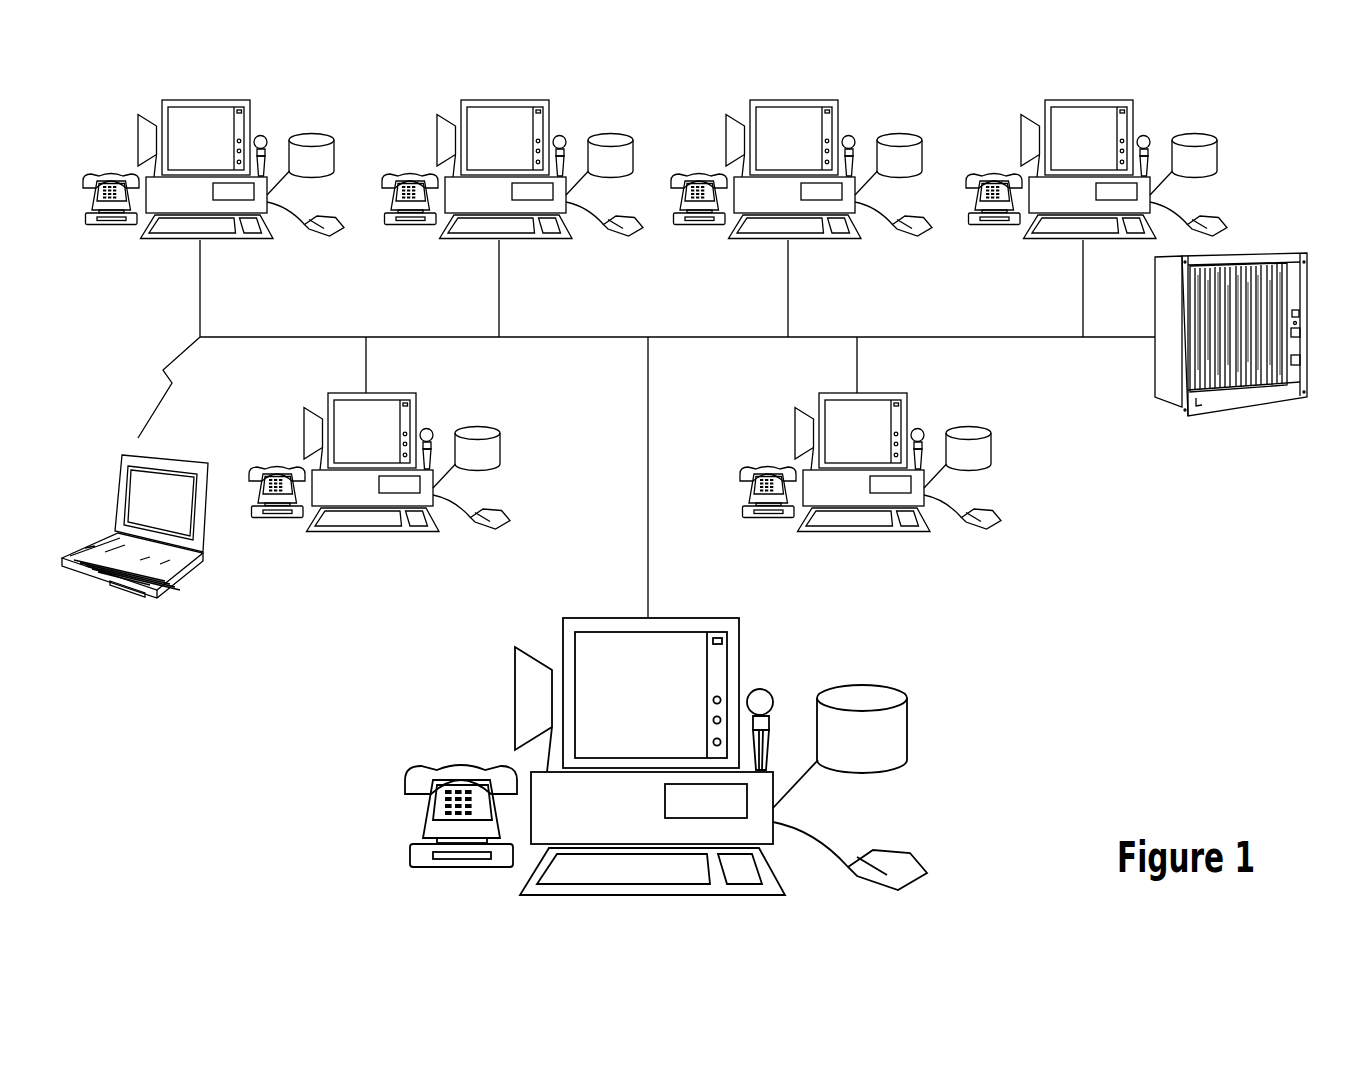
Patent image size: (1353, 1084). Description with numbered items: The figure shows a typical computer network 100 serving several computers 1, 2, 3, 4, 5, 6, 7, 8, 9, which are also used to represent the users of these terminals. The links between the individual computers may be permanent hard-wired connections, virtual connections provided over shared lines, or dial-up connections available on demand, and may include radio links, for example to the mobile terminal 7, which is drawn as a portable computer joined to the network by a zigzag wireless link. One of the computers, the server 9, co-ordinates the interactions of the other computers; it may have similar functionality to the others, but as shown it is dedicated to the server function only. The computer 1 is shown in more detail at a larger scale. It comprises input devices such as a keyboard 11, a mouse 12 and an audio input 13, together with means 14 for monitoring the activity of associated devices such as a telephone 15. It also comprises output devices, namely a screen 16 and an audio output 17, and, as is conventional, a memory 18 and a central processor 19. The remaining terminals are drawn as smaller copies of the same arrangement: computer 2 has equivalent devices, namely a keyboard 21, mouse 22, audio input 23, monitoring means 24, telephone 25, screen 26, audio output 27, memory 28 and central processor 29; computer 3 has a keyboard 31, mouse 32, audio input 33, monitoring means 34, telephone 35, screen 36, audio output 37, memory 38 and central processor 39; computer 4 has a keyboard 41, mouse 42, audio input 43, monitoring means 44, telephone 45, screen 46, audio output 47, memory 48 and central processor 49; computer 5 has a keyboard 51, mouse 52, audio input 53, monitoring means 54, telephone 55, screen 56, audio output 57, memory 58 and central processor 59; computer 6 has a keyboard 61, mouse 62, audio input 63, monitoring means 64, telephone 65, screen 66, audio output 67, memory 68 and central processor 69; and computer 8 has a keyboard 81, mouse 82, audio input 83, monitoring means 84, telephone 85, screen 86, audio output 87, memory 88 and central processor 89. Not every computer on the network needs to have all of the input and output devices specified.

The network 100 is at (1058, 607).
The computer 1 is at (674, 754).
The keyboard 11 is at (652, 890).
The mouse 12 is at (858, 855).
The audio input 13 is at (782, 713).
The means for monitoring the activity of associated devices 14 is at (461, 881).
The telephone 15 is at (461, 774).
The screen 16 is at (688, 692).
The audio output 17 is at (504, 709).
The memory 18 is at (840, 751).
The central processor 19 is at (680, 838).
The computer 2 is at (873, 458).
The keyboard 21 is at (864, 531).
The mouse 22 is at (969, 508).
The audio input 23 is at (931, 437).
The means for monitoring the activity of associated devices 24 is at (769, 530).
The telephone 25 is at (763, 467).
The screen 26 is at (885, 427).
The audio output 27 is at (785, 438).
The memory 28 is at (957, 462).
The central processor 29 is at (879, 505).
The computer 3 is at (1099, 165).
The keyboard 31 is at (1090, 238).
The mouse 32 is at (1195, 215).
The audio input 33 is at (1157, 144).
The means for monitoring the activity of associated devices 34 is at (995, 237).
The telephone 35 is at (989, 174).
The screen 36 is at (1111, 134).
The audio output 37 is at (1011, 145).
The memory 38 is at (1183, 169).
The central processor 39 is at (1105, 212).
The computer 4 is at (804, 165).
The keyboard 41 is at (795, 238).
The mouse 42 is at (900, 215).
The audio input 43 is at (862, 144).
The means for monitoring the activity of associated devices 44 is at (700, 237).
The telephone 45 is at (694, 174).
The screen 46 is at (816, 134).
The audio output 47 is at (716, 145).
The memory 48 is at (888, 169).
The central processor 49 is at (810, 212).
The computer 5 is at (515, 165).
The keyboard 51 is at (506, 238).
The mouse 52 is at (611, 215).
The audio input 53 is at (573, 144).
The means for monitoring the activity of associated devices 54 is at (411, 237).
The telephone 55 is at (405, 174).
The screen 56 is at (527, 134).
The audio output 57 is at (427, 145).
The memory 58 is at (599, 169).
The central processor 59 is at (521, 212).
The computer 6 is at (224, 92).
The keyboard 61 is at (209, 238).
The mouse 62 is at (327, 216).
The audio input 63 is at (266, 136).
The means for monitoring the activity of associated devices 64 is at (99, 226).
The telephone 65 is at (98, 173).
The screen 66 is at (250, 109).
The audio output 67 is at (138, 126).
The memory 68 is at (310, 178).
The central processor 69 is at (264, 212).
The mobile terminal 7 is at (116, 464).
The computer 8 is at (382, 458).
The keyboard 81 is at (373, 531).
The mouse 82 is at (478, 508).
The audio input 83 is at (440, 437).
The means for monitoring the activity of associated devices 84 is at (278, 530).
The telephone 85 is at (272, 467).
The screen 86 is at (394, 427).
The audio output 87 is at (294, 438).
The memory 88 is at (466, 462).
The central processor 89 is at (388, 505).
The server 9 is at (1233, 424).